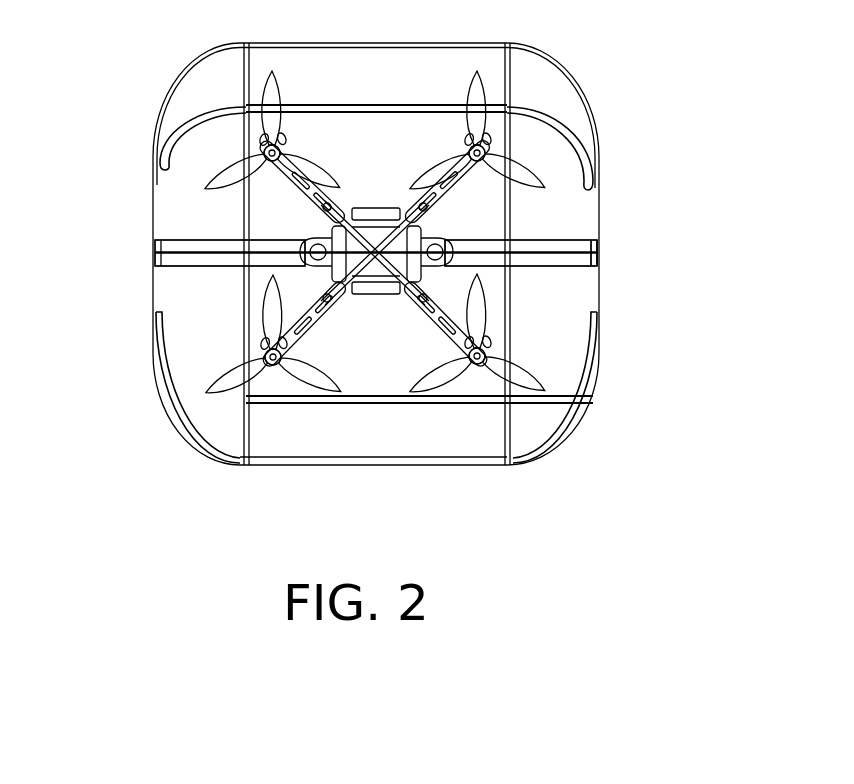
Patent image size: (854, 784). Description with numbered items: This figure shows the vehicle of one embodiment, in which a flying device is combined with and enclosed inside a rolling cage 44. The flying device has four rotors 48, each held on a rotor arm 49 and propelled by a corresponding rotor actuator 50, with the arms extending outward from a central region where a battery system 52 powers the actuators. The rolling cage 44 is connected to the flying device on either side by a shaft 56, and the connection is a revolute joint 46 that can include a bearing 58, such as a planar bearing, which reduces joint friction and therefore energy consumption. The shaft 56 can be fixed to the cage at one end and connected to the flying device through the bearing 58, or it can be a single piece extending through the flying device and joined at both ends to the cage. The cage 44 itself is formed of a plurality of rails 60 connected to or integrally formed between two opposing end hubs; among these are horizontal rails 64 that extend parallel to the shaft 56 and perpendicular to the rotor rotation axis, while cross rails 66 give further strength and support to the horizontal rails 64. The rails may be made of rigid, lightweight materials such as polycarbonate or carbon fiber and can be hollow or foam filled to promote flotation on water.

The rolling cage 44 is at (152, 118).
The revolute joint 46 is at (149, 253).
The rotor 48 is at (537, 177).
The rotor arm 49 is at (340, 318).
The rotor actuator 50 is at (505, 163).
The battery system 52 is at (372, 237).
The shaft 56 is at (190, 240).
The bearing 58 is at (600, 250).
The rail 60 is at (268, 463).
The horizontal rail 64 is at (470, 467).
The cross rail 66 is at (510, 83).